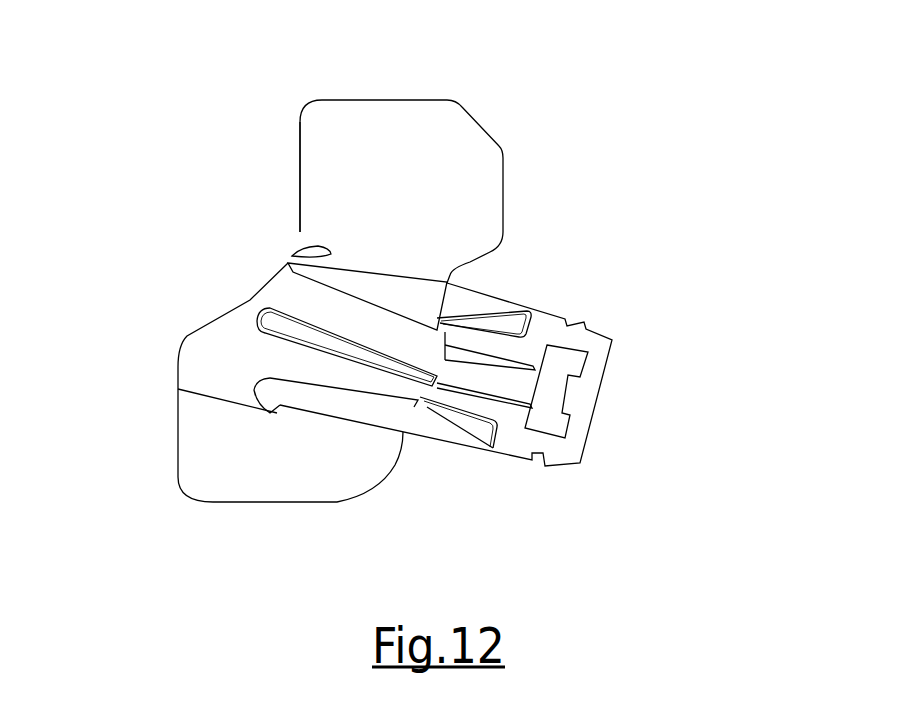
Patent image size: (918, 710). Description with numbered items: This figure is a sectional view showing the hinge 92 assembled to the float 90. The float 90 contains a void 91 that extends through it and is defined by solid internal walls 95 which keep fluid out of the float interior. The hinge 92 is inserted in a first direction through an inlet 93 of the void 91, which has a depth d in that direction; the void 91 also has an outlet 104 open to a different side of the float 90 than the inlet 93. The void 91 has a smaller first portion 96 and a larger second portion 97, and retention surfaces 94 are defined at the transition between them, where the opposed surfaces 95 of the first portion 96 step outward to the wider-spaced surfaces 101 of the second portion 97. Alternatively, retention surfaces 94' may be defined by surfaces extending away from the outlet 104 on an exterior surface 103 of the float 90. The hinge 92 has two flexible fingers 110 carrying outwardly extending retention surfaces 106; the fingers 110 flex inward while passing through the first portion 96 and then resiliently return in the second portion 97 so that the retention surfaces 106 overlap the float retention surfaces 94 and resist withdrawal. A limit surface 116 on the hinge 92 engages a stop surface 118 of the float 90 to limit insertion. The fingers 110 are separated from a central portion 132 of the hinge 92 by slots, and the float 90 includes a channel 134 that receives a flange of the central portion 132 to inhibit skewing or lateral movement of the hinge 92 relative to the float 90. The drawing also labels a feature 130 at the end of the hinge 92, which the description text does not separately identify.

The float 90 is at (425, 117).
The void 91 is at (177, 355).
The hinge 92 is at (533, 292).
The inlet 93 is at (427, 398).
The retention surfaces 94 is at (225, 317).
The retention surfaces defined by exterior surface 94' is at (194, 241).
The internal walls 95 is at (398, 282).
The first portion 96 is at (317, 420).
The second portion 97 is at (217, 375).
The surfaces of the second portion 101 is at (307, 238).
The exterior surface 103 is at (177, 465).
The outlet 104 is at (347, 327).
The retention surfaces of the hinge 106 is at (278, 412).
The flexible fingers 110 is at (408, 293).
The limit surface 116 is at (433, 319).
The stop surface 118 is at (417, 392).
The clamping head 130 is at (593, 367).
The central portion 132 is at (267, 303).
The channel 134 is at (258, 314).
The depth d is at (452, 268).